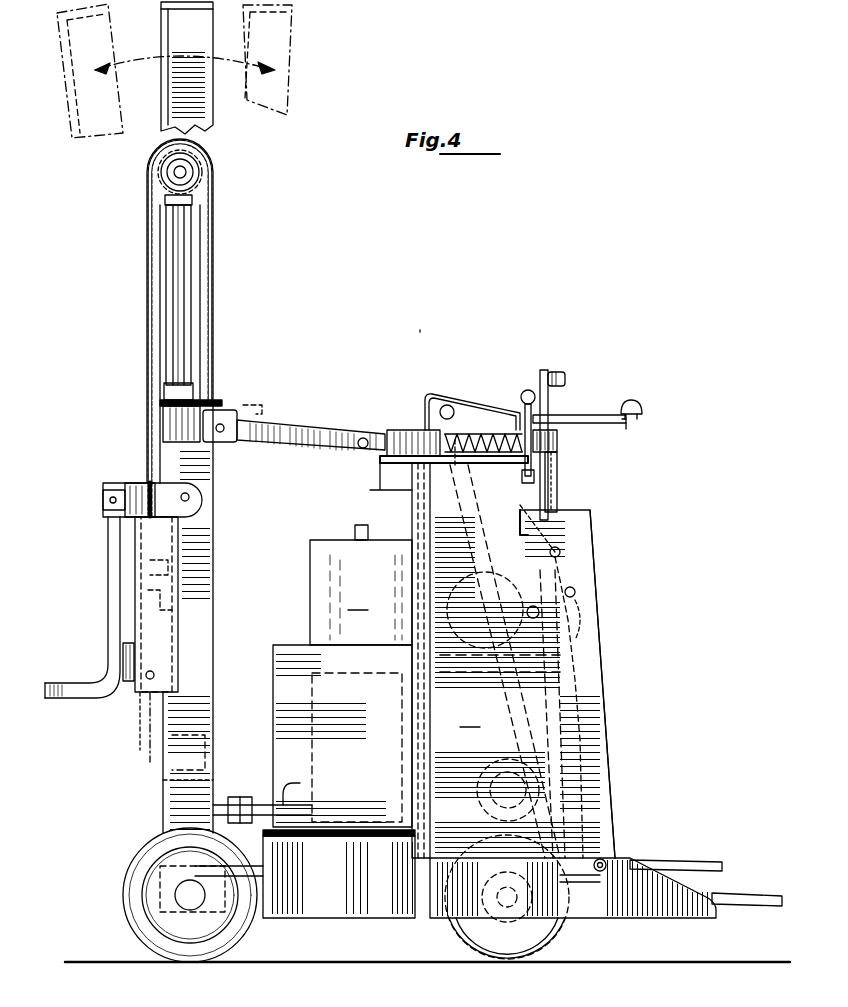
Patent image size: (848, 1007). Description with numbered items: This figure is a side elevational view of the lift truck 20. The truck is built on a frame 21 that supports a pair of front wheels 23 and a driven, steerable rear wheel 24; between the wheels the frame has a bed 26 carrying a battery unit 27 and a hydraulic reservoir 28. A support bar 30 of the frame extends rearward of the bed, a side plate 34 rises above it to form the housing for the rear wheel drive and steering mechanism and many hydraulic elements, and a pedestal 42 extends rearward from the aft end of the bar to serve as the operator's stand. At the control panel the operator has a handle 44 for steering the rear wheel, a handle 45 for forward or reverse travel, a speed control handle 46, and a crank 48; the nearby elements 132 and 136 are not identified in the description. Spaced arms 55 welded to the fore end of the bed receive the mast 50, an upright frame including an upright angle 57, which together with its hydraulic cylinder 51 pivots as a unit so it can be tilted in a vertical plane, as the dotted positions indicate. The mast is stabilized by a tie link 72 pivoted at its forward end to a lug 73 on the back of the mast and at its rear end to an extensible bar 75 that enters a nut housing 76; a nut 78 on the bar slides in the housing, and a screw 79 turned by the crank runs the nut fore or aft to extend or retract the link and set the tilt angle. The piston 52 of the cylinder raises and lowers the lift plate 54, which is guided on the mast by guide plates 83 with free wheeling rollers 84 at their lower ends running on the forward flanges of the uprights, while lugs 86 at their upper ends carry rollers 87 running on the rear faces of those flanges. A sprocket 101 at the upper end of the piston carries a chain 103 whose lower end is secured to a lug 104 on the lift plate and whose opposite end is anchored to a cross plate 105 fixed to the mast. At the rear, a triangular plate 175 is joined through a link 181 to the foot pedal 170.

The lift truck 20 is at (399, 350).
The frame 21 is at (588, 920).
The front wheels 23 is at (135, 910).
The rear wheel 24 is at (468, 935).
The bed 26 is at (303, 905).
The battery unit 27 is at (325, 672).
The hydraulic reservoir 28 is at (361, 585).
The support bar 30 is at (700, 915).
The side plate 34 is at (513, 660).
The pedestal 42 is at (745, 893).
The handle 44 is at (617, 410).
The handle 45 is at (522, 398).
The speed control handle 46 is at (445, 405).
The crank 48 is at (546, 372).
The mast 50 is at (200, 47).
The hydraulic cylinder 51 is at (205, 750).
The piston 52 is at (185, 305).
The lift plate 54 is at (158, 708).
The arms 55 is at (258, 872).
The upright angle 57 is at (178, 773).
The tie link 72 is at (297, 432).
The lug 73 is at (238, 415).
The extensible bar 75 is at (363, 448).
The nut housing 76 is at (400, 430).
The nut 78 is at (458, 465).
The screw 79 is at (480, 456).
The guide plate 83 is at (178, 650).
The roller 84 is at (125, 690).
The lug 86 is at (148, 482).
The roller 87 is at (202, 495).
The sprocket 101 is at (200, 172).
The chain 103 is at (152, 265).
The lug 104 is at (176, 600).
The cross plate 105 is at (215, 402).
The post 132 is at (557, 490).
The block 136 is at (560, 442).
The foot pedal 170 is at (690, 858).
The triangular plate 175 is at (575, 576).
The link 181 is at (600, 742).